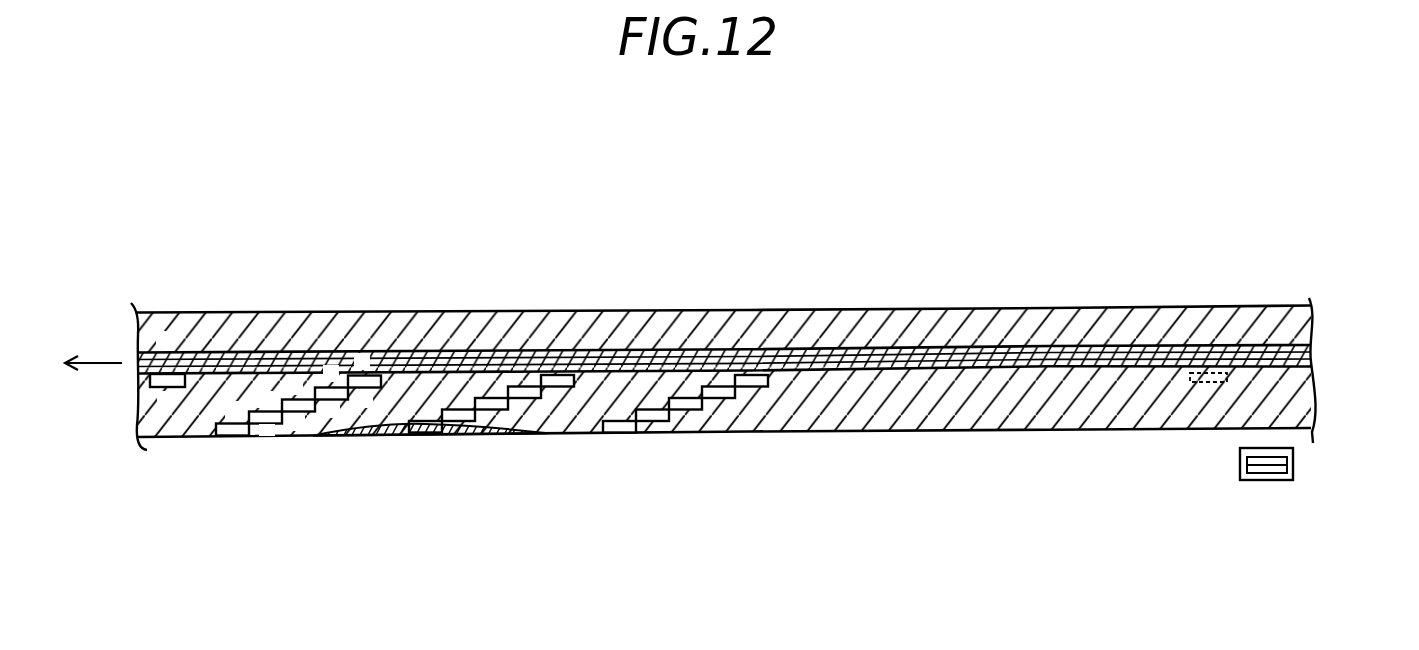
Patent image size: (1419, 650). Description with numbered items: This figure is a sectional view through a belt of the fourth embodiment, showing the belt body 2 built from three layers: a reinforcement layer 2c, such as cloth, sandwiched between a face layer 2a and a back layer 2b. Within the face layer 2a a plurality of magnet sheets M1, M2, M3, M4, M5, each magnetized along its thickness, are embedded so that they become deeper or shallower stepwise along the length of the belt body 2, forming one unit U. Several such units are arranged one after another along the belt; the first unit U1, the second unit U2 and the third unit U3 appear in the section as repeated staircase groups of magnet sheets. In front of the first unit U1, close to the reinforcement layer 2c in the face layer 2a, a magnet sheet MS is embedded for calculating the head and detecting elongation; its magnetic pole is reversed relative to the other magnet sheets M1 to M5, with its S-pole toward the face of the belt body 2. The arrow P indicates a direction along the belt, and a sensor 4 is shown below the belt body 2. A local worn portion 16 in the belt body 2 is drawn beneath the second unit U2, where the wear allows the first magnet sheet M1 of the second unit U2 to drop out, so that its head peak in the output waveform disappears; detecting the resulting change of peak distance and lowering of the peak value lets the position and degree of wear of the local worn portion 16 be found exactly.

The belt body 2 is at (880, 306).
The face layer 2a is at (1313, 403).
The back layer 2b is at (1312, 323).
The reinforcement layer 2c is at (1312, 355).
The magnetic sensor 4 is at (1265, 480).
The local worn portion 16 is at (480, 436).
The first magnet sheet M1 is at (225, 438).
The second magnet sheet M2 is at (283, 436).
The third magnet sheet M3 is at (312, 422).
The fourth magnet sheet M4 is at (346, 410).
The fifth magnet sheet M5 is at (390, 427).
The magnet sheet for calculating the head and detecting elongation MS is at (153, 388).
The unit U is at (338, 394).
The first unit U1 is at (341, 370).
The second unit U2 is at (496, 396).
The third unit U3 is at (687, 394).
The conveying direction P is at (110, 363).